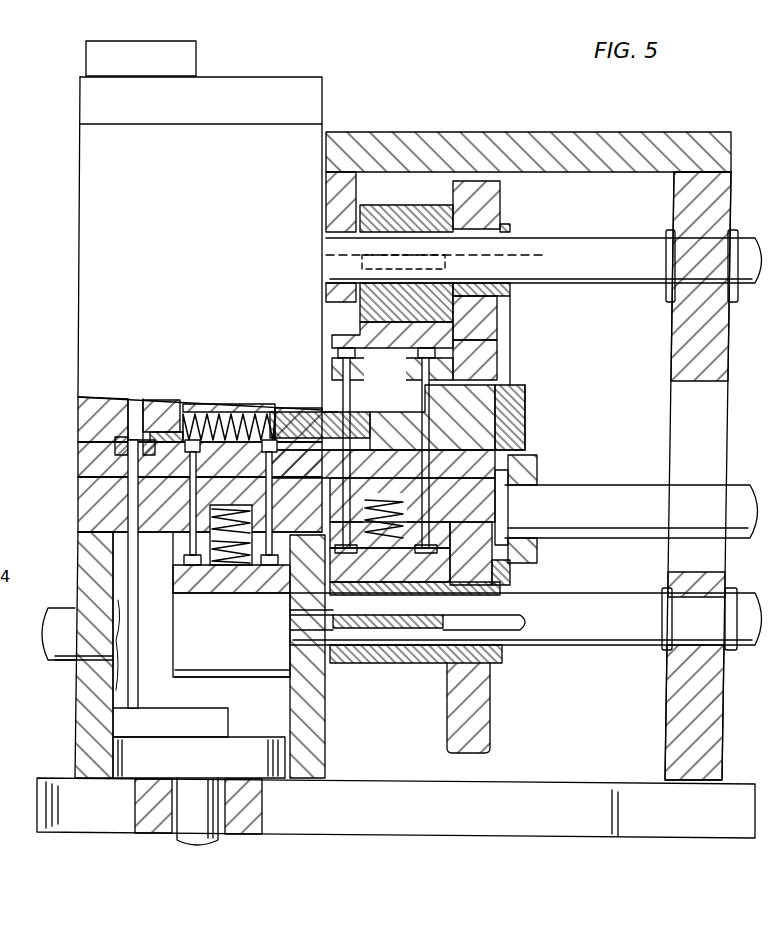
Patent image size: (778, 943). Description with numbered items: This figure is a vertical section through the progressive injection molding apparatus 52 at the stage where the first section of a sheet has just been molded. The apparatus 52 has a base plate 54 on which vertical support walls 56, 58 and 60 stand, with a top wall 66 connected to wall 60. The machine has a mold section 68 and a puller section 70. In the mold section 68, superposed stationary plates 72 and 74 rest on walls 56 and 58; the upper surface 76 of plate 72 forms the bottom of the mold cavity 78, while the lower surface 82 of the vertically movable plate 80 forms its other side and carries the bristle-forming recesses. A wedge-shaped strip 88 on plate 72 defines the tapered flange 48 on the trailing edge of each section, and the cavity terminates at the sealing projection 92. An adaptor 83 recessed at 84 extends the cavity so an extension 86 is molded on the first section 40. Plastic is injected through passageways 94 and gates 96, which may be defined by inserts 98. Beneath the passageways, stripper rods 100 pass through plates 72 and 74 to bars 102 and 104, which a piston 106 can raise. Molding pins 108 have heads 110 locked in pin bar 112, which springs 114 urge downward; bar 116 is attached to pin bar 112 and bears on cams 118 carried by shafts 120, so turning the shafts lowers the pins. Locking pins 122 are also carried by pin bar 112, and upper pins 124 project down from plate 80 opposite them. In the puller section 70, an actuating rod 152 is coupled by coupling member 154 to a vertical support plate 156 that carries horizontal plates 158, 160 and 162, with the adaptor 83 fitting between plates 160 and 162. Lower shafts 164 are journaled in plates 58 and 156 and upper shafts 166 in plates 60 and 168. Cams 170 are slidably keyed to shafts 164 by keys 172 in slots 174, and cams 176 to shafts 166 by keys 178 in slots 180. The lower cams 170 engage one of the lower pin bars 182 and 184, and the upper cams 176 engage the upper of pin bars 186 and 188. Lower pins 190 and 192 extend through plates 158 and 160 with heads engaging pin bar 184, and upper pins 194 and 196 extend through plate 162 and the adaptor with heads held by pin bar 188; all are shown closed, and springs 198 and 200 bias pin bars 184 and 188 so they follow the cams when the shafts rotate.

The apparatus 52 is at (54, 177).
The top wall 66 is at (561, 142).
The vertical support wall 60 is at (684, 200).
The base plate 54 is at (587, 786).
The piston 106 is at (187, 805).
The vertically movable bar 104 is at (222, 766).
The vertically movable bar 102 is at (228, 718).
The vertical support wall 56 is at (76, 727).
The vertical support wall 58 is at (312, 735).
The plate 168 is at (338, 190).
The upper cam 176 is at (430, 208).
The key 178 is at (408, 252).
The upper shaft 166 is at (613, 278).
The slot 180 is at (540, 258).
The upper pin bar 186 is at (462, 331).
The spring 200 is at (392, 366).
The upper pin bar 188 is at (472, 352).
The horizontal plate 162 is at (470, 368).
The lower set of pins 190 is at (350, 461).
The lower set of pins 192 is at (429, 461).
The upper set of pins 194 is at (342, 382).
The recess 84 is at (300, 412).
The upper set of pins 196 is at (434, 424).
The adaptor 83 is at (521, 424).
The puller section 70 is at (528, 439).
The extension 86 is at (382, 464).
The spring 198 is at (406, 504).
The lower pin bar 182 is at (410, 576).
The lower pin bar 184 is at (446, 548).
The horizontal plate 158 is at (510, 501).
The horizontal plate 160 is at (537, 463).
The coupling member 154 is at (537, 554).
The vertical support plate 156 is at (510, 579).
The actuating rod 152 is at (643, 490).
The lower shaft 164 is at (612, 642).
The key 172 is at (418, 622).
The slot 174 is at (519, 618).
The lower cam 170 is at (375, 664).
The vertically movable plate 80 is at (86, 421).
The passageway 94 is at (134, 398).
The wedge-shaped strip 88 is at (164, 426).
The insert 98 is at (116, 438).
The lower surface 82 is at (188, 414).
The mold cavity 78 is at (231, 420).
The sealing projection 92 is at (259, 414).
The upper pin 124 is at (271, 408).
The plate 72 is at (82, 476).
The gate 96 is at (111, 457).
The tapered flange 48 is at (161, 456).
The upper surface 76 is at (228, 454).
The mold section 68 is at (72, 448).
The plate 74 is at (82, 511).
The newly molded section 40 is at (178, 488).
The stripper rod 100 is at (128, 578).
The molding pin 108 is at (190, 518).
The head 110 is at (184, 560).
The spring 114 is at (260, 531).
The locking pin 122 is at (254, 527).
The pin bar 112 is at (213, 570).
The bar 116 is at (212, 596).
The cam 118 is at (189, 668).
The shaft 120 is at (76, 650).